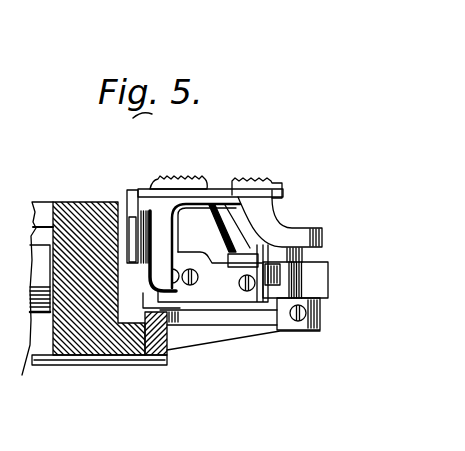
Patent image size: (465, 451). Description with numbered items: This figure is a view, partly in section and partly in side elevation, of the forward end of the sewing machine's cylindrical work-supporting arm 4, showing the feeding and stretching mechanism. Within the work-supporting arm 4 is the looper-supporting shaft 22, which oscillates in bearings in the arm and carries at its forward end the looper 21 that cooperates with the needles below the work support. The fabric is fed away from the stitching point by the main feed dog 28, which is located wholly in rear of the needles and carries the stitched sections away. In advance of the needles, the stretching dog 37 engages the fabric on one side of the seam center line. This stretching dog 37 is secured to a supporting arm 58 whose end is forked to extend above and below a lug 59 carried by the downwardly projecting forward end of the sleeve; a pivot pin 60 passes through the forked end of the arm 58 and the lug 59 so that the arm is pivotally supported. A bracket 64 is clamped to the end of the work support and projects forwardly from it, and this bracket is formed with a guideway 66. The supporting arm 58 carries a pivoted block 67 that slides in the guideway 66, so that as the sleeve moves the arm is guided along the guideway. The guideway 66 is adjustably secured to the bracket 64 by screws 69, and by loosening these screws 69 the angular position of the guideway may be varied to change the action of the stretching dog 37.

The work-supporting arm 4 is at (108, 350).
The looper-supporting shaft 22 is at (33, 342).
The lug 59 is at (130, 222).
The pivot pin 60 is at (138, 188).
The supporting arm 58 is at (207, 196).
The main feed dog 28 is at (188, 176).
The stretching dog 37 is at (270, 188).
The looper 21 is at (233, 231).
The pivoted block 67 is at (305, 257).
The guideway 66 is at (285, 283).
The screws 69 is at (322, 316).
The bracket 64 is at (236, 323).